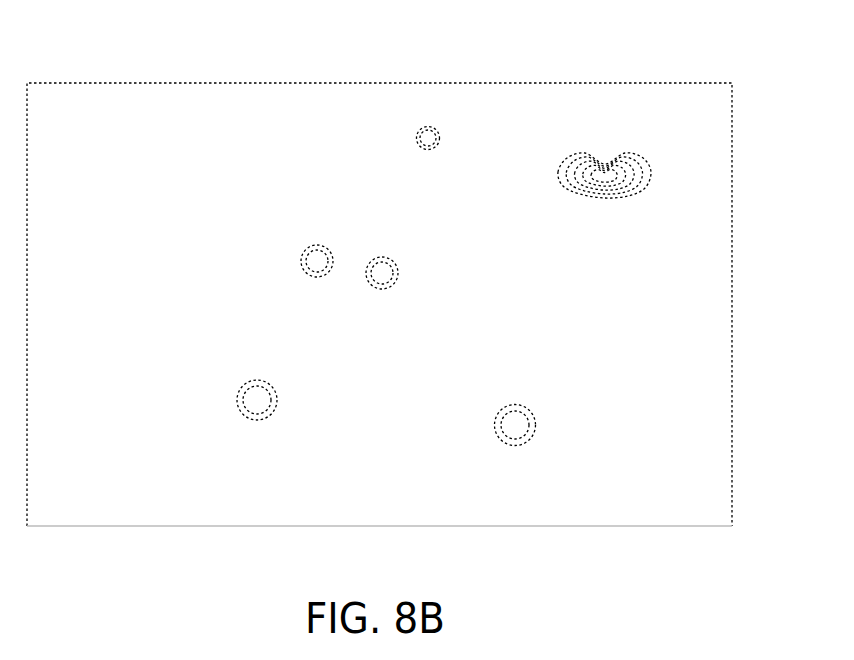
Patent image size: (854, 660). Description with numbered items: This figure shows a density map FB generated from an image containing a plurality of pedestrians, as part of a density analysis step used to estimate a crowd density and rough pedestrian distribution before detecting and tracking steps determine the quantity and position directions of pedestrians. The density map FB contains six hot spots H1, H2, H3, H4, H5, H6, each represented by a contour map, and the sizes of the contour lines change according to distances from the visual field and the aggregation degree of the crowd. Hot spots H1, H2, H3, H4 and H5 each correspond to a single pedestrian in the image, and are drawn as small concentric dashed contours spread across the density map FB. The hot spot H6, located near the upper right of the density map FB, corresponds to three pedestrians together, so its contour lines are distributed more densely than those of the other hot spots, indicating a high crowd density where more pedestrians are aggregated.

The density map FB is at (692, 83).
The hot spot H1 is at (255, 405).
The hot spot H2 is at (513, 432).
The hot spot H3 is at (320, 264).
The hot spot H4 is at (386, 274).
The hot spot H5 is at (431, 135).
The hot spot H6 is at (613, 178).